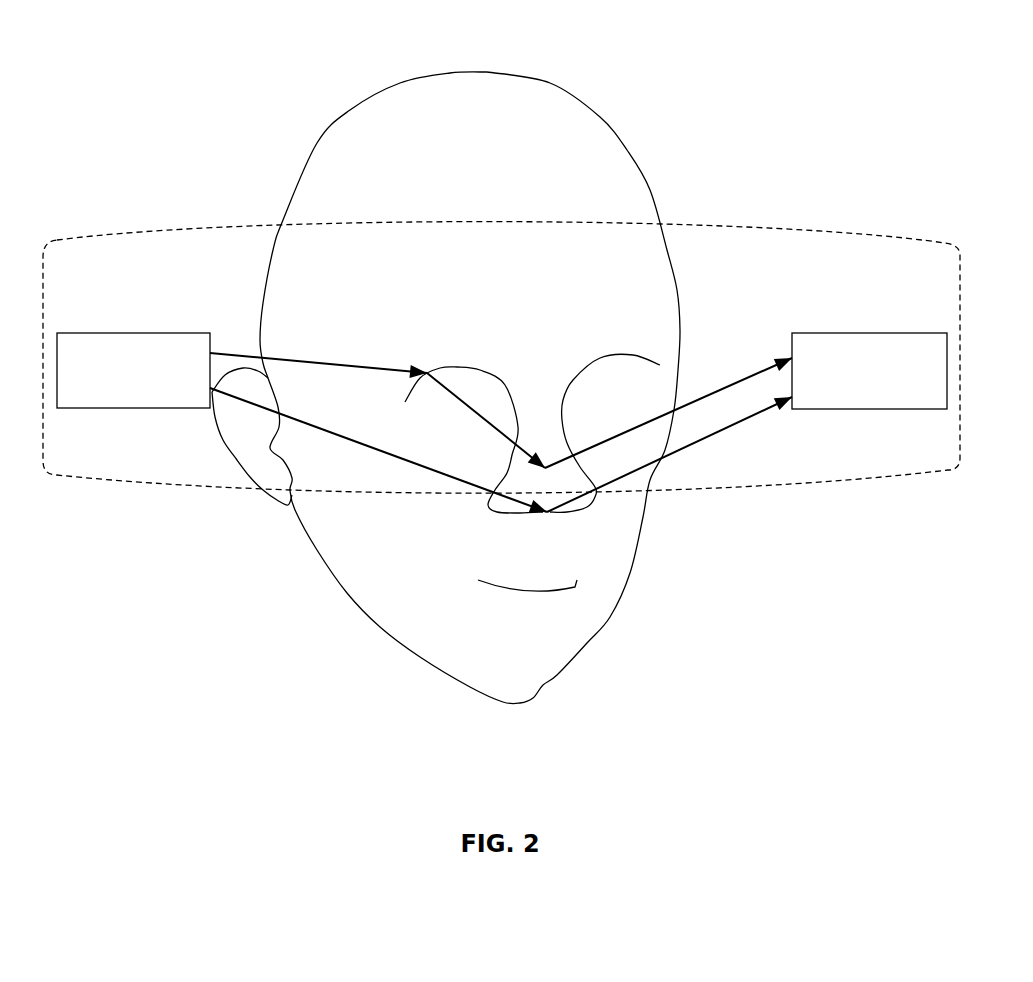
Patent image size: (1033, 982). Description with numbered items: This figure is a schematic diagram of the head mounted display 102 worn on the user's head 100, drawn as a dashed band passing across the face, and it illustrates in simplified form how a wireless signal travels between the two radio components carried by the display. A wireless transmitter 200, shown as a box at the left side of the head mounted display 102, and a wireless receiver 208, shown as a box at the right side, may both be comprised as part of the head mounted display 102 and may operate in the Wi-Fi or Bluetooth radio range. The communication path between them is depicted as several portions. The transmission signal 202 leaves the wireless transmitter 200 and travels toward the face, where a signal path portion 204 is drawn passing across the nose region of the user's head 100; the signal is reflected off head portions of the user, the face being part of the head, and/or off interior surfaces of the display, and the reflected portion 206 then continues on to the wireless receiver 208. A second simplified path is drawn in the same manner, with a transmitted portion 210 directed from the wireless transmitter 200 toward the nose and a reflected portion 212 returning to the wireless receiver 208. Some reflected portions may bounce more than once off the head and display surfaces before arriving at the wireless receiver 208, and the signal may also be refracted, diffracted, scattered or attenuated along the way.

The user's head 100 is at (480, 72).
The head mounted display 102 is at (110, 233).
The wireless transmitter 200 is at (113, 332).
The transmission signal 202 is at (330, 362).
The signal path through nose region 204 is at (468, 403).
The reflected portion 206 is at (723, 388).
The wireless receiver 208 is at (850, 333).
The transmission path portion 210 is at (437, 471).
The transmission path portion 212 is at (667, 456).